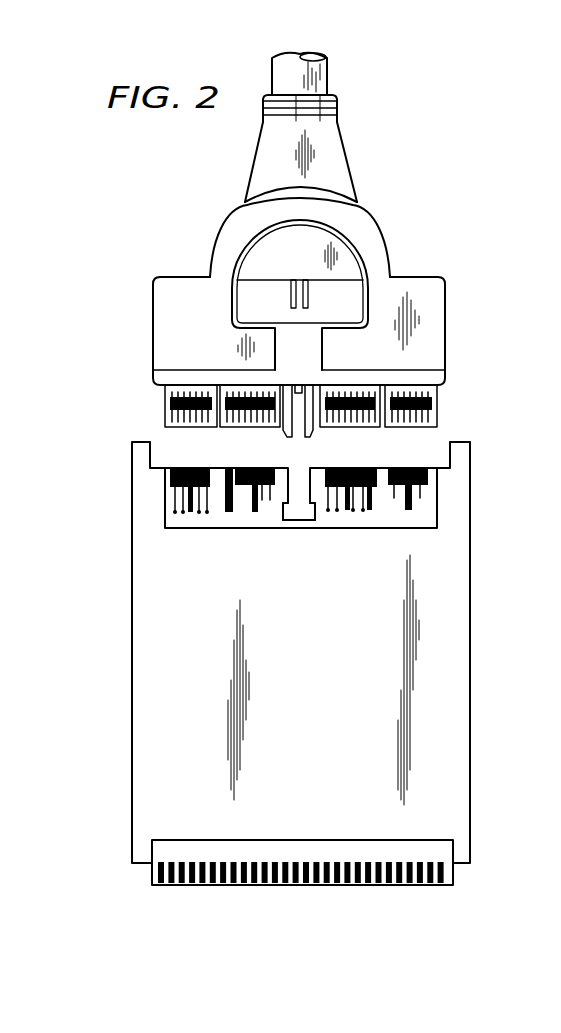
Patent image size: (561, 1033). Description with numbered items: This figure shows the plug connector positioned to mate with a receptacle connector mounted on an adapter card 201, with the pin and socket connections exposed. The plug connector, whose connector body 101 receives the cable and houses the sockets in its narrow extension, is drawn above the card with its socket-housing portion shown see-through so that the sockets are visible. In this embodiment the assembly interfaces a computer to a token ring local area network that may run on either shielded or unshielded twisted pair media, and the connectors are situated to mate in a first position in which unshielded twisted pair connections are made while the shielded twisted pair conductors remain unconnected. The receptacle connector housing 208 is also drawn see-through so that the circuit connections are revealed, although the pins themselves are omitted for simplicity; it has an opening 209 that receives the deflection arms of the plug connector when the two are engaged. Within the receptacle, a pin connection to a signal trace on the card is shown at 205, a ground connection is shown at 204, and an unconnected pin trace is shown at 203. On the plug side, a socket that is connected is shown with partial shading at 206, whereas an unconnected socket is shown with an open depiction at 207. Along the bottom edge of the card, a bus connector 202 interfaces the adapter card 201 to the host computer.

The connector body 101 is at (299, 245).
The adapter card 201 is at (478, 667).
The bus connector 202 is at (453, 875).
The unconnected pin trace 203 is at (425, 468).
The ground connection 204 is at (345, 468).
The pin connection to signal trace 205 is at (208, 468).
The connection to socket 206 is at (436, 414).
The unconnected socket 207 is at (166, 411).
The receptacle connector housing 208 is at (352, 507).
The opening 209 is at (298, 520).